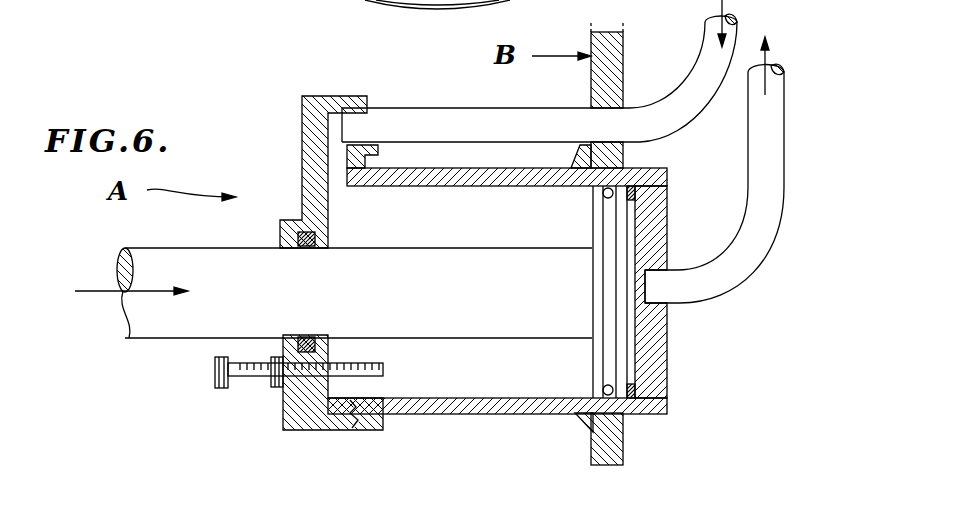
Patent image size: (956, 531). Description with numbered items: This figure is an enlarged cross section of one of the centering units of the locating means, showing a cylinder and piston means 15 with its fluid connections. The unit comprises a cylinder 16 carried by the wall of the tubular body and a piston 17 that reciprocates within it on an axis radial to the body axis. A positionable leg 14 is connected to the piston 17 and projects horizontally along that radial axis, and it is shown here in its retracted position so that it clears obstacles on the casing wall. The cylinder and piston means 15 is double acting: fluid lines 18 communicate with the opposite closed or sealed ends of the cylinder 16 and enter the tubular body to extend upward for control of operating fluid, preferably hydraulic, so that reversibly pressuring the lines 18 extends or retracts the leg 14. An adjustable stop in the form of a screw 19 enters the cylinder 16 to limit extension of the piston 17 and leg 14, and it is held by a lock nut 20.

The leg 14 is at (152, 328).
The cylinder and piston means 15 is at (410, 102).
The cylinder 16 is at (480, 166).
The piston 17 is at (605, 222).
The fluid lines 18 is at (740, 32).
The screw 19 is at (388, 368).
The lock nut 20 is at (268, 390).